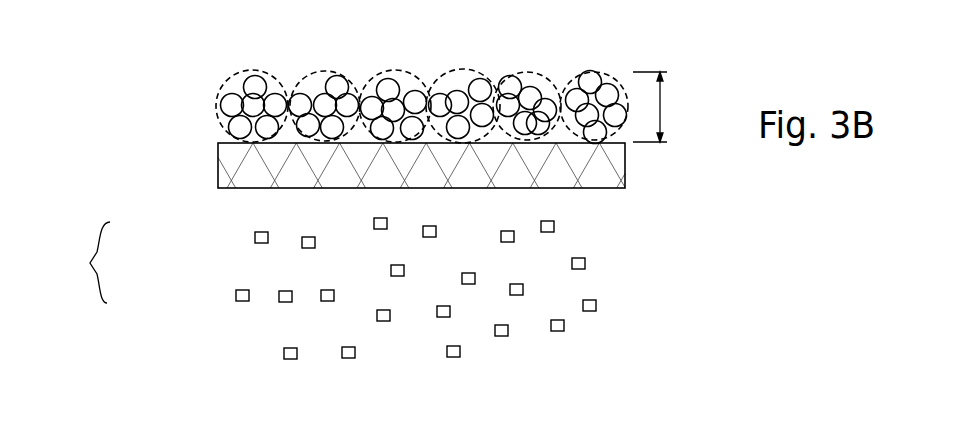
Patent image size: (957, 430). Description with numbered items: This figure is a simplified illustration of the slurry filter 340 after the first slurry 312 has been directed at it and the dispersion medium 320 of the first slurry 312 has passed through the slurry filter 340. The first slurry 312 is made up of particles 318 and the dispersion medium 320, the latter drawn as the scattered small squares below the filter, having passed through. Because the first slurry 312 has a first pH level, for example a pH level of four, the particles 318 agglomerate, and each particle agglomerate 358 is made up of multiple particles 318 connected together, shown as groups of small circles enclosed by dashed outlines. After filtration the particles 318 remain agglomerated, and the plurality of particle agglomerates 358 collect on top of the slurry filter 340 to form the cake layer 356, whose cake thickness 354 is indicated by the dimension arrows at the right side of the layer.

The first slurry 312 is at (80, 262).
The particles 318 is at (238, 132).
The dispersion medium 320 is at (236, 294).
The slurry filter 340 is at (630, 176).
The cake thickness 354 is at (657, 107).
The cake layer 356 is at (200, 158).
The particle agglomerates 358 is at (474, 60).